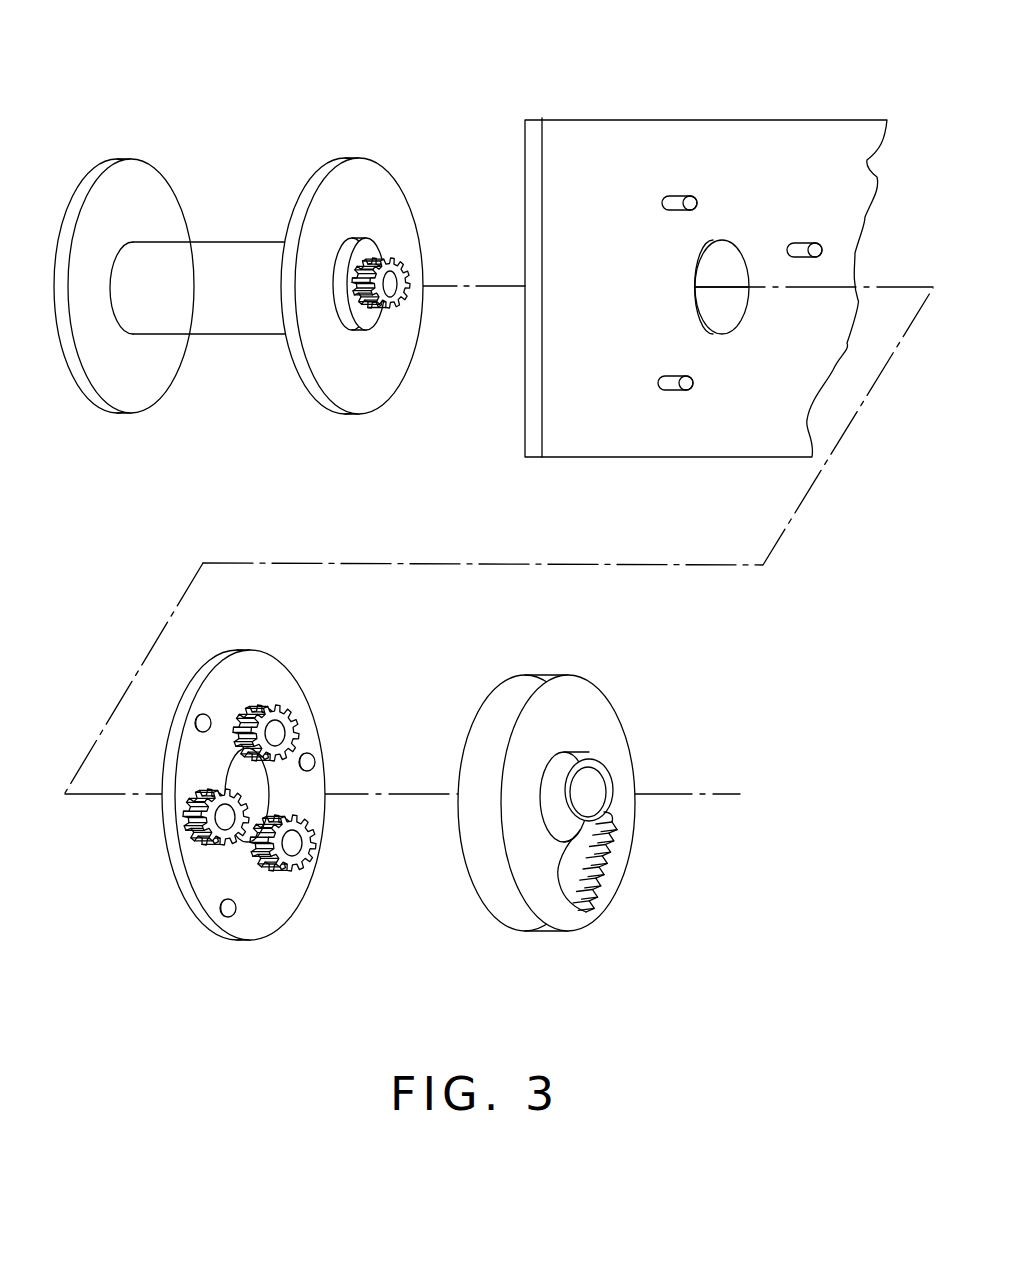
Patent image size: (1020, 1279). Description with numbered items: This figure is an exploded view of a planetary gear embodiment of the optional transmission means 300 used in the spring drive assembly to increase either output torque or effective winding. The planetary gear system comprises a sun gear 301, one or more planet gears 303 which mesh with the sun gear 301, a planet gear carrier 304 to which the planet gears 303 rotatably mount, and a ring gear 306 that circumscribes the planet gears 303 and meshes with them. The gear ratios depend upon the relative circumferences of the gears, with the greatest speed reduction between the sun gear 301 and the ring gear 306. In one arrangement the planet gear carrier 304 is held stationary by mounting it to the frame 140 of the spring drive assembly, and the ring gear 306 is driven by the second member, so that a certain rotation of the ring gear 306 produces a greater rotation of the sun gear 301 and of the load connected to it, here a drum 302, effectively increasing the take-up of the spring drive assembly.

The drive assembly 300 is at (526, 60).
The frame 140 is at (638, 126).
The drum 302 is at (367, 173).
The sun gear 301 is at (398, 257).
The planet gear carrier 304 is at (258, 663).
The planet gears 303 is at (284, 700).
The ring gear 306 is at (527, 682).